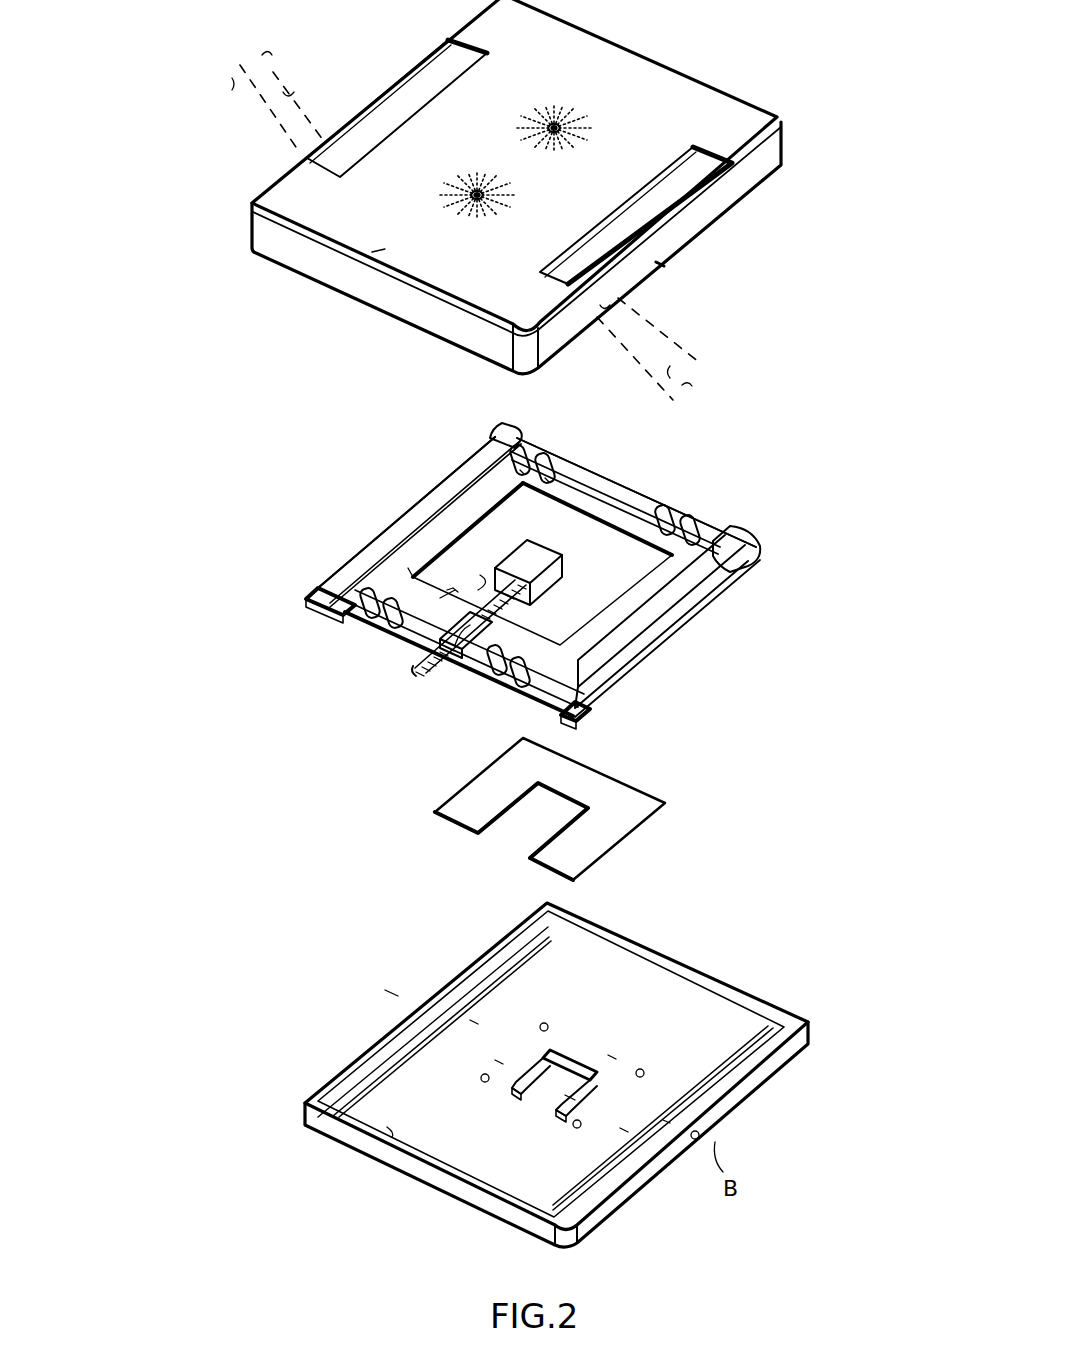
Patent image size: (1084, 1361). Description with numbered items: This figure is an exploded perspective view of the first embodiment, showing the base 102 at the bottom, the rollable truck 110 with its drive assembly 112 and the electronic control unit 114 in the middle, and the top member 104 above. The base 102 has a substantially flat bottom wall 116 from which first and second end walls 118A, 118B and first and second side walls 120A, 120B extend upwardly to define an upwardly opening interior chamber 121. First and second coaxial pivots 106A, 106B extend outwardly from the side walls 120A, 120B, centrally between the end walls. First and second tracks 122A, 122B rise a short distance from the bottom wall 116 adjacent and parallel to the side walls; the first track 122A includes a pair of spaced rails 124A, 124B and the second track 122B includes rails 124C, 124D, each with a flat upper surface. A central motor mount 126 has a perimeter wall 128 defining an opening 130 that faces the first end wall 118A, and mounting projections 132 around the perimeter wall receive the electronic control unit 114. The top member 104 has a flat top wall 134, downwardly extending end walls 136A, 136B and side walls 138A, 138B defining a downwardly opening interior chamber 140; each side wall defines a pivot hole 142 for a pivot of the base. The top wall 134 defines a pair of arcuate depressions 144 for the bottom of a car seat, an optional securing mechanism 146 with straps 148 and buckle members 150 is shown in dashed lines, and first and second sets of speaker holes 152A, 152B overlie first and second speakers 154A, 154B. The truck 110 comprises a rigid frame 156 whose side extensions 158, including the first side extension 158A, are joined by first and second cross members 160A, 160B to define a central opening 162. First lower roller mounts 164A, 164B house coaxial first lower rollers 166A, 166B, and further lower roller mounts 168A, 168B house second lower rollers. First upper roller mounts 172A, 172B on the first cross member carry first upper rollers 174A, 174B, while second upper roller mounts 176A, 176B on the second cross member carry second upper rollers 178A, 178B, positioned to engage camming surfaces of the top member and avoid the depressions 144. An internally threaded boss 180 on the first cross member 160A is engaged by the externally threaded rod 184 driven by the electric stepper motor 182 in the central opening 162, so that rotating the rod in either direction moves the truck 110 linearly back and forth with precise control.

The base 102 is at (312, 1135).
The top member 104 is at (262, 255).
The first pivot 106A is at (338, 1070).
The second pivot 106B is at (703, 1135).
The truck 110 is at (509, 582).
The drive assembly 112 is at (680, 628).
The electronic control unit 114 is at (432, 812).
The bottom wall 116 is at (602, 979).
The first end wall 118A is at (466, 1193).
The second end wall 118B is at (620, 936).
The first side wall 120A is at (330, 1098).
The second side wall 120B is at (628, 1193).
The interior chamber 121 is at (387, 1127).
The first track 122A is at (418, 1008).
The second track 122B is at (728, 1075).
The rail 124A is at (470, 1000).
The rail 124B is at (540, 943).
The rail 124C is at (757, 1043).
The rail 124D is at (773, 1057).
The motor mount 126 is at (555, 1050).
The perimeter wall 128 is at (594, 1066).
The opening 130 is at (540, 1092).
The mounting projections 132 is at (503, 1027).
The top wall 134 is at (550, 52).
The first end wall 136A is at (396, 300).
The second end wall 136B is at (645, 22).
The first side wall 138A is at (262, 192).
The second side wall 138B is at (752, 178).
The interior chamber 140 is at (370, 258).
The pivot hole 142 is at (664, 265).
The arcuate depressions 144 is at (448, 58).
The securing mechanism 146 is at (226, 78).
The straps 148 is at (284, 99).
The buckle members 150 is at (258, 58).
The first set of speaker holes 152A is at (436, 186).
The second set of speaker holes 152B is at (530, 126).
The first speaker 154A is at (472, 225).
The second speaker 154B is at (548, 108).
The frame 156 is at (527, 582).
The side extensions 158 is at (625, 672).
The first side extension 158A is at (387, 530).
The first cross member 160A is at (395, 645).
The second cross member 160B is at (600, 465).
The central opening 162 is at (597, 522).
The first lower roller mount 164A is at (318, 628).
The first lower roller mount 164B is at (590, 714).
The first lower roller 166A is at (312, 605).
The first lower roller 166B is at (572, 725).
The lower roller mount 168A is at (495, 432).
The lower roller mount 168B is at (752, 540).
The first upper roller mount 172A is at (385, 630).
The first upper roller mount 172B is at (518, 692).
The first upper roller 174A is at (362, 592).
The first upper roller 174B is at (512, 652).
The second upper roller mount 176A is at (535, 510).
The second upper roller mount 176B is at (672, 554).
The second upper roller 178A is at (530, 450).
The second upper roller 178B is at (680, 512).
The internally threaded boss 180 is at (448, 662).
The electric stepper motor 182 is at (560, 571).
The externally threaded rod 184 is at (415, 680).